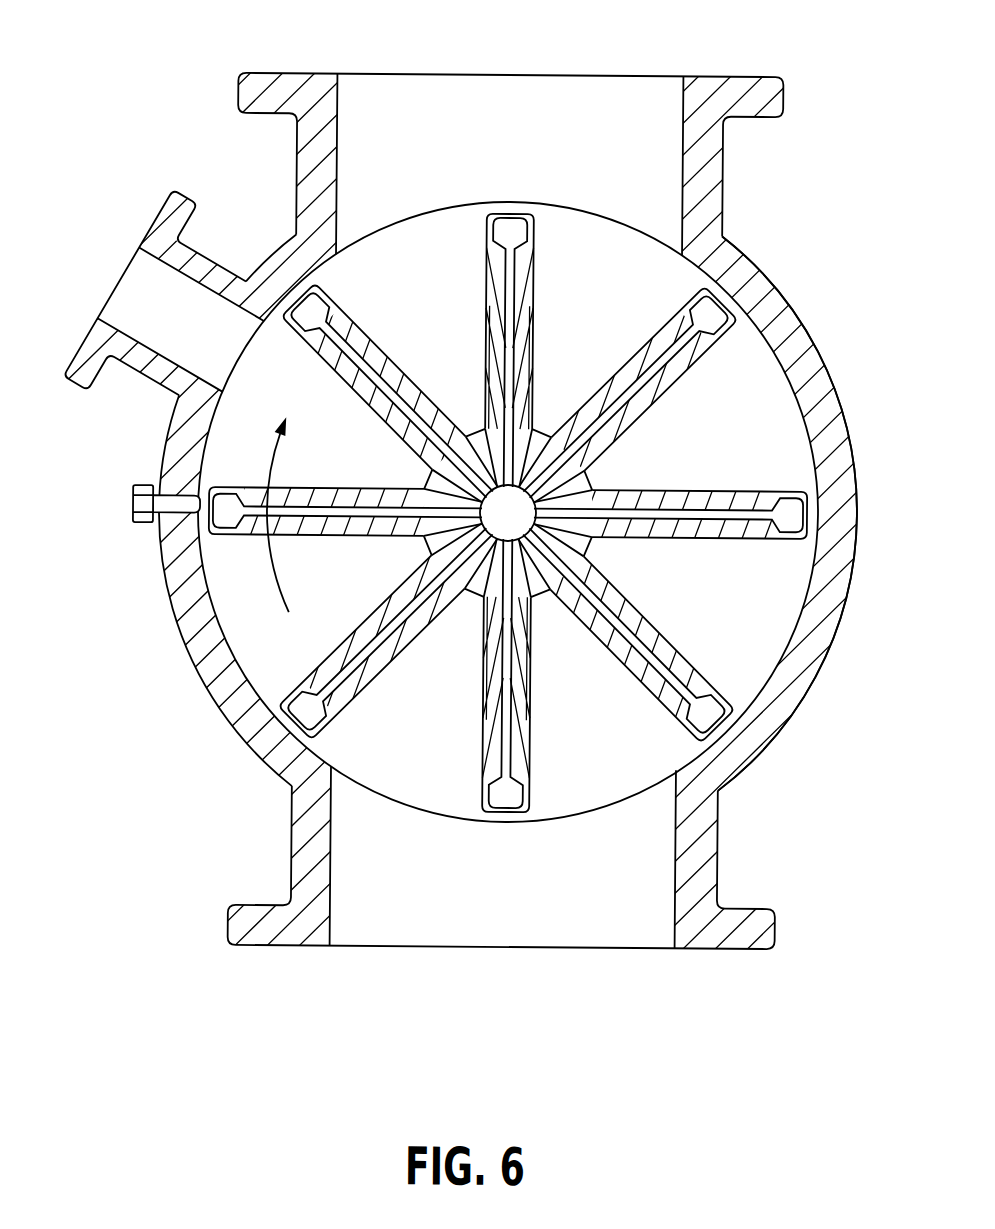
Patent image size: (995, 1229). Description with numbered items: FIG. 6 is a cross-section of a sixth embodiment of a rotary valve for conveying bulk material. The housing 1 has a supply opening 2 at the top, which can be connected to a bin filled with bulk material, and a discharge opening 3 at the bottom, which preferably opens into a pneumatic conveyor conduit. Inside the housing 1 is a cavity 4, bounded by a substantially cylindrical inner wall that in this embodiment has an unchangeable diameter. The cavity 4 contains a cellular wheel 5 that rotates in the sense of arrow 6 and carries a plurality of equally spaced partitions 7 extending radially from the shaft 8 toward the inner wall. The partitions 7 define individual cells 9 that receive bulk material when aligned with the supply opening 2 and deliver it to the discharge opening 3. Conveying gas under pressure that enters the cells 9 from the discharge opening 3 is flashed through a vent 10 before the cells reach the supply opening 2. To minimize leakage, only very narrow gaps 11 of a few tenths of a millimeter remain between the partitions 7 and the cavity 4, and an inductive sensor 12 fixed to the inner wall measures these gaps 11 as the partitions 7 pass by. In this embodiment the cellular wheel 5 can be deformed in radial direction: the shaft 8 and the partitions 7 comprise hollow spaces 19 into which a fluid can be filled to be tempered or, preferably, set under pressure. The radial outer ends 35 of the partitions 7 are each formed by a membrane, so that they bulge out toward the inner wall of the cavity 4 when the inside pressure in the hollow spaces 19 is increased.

The housing 1 is at (840, 277).
The supply opening 2 is at (572, 100).
The discharge opening 3 is at (608, 920).
The cavity 4 is at (790, 641).
The cellular wheel 5 is at (592, 486).
The arrow 6 is at (282, 572).
The partitions 7 is at (535, 316).
The shaft 8 is at (546, 578).
The cells 9 is at (437, 306).
The vent 10 is at (128, 292).
The gaps 11 is at (292, 704).
The inductive sensor 12 is at (140, 504).
The hollow spaces 19 is at (350, 352).
The radial outer ends 35 is at (508, 812).